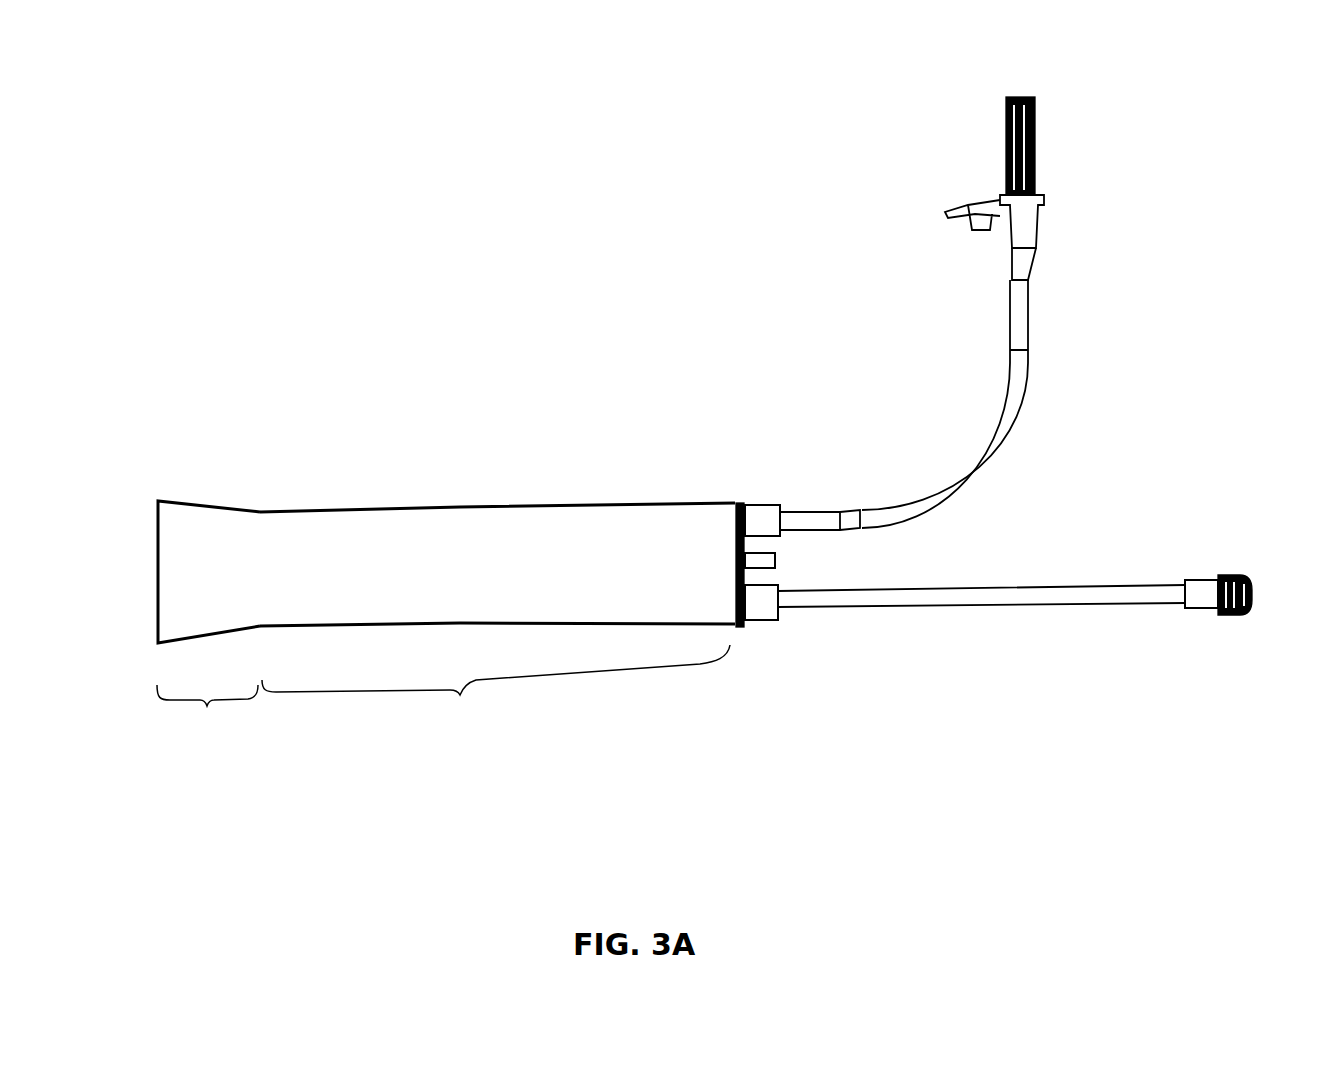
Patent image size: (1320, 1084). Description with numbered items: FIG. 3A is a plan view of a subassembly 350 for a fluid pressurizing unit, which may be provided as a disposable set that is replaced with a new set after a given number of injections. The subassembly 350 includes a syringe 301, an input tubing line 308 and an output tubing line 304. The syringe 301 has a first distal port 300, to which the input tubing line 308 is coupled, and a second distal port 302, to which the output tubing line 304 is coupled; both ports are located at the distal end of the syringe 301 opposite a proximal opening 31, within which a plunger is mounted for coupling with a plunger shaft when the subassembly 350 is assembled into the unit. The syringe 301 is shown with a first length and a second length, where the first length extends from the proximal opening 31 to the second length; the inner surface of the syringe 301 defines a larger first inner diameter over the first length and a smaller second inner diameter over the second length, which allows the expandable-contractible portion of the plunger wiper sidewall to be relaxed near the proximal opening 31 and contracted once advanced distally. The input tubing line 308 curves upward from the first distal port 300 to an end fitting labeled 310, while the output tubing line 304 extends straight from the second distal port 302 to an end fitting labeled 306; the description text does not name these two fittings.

The subassembly 350 is at (300, 167).
The proximal opening 31 is at (142, 520).
The syringe 301 is at (487, 472).
The first distal port 300 is at (763, 472).
The second distal port 302 is at (763, 645).
The output tubing line 304 is at (1000, 645).
The end cap 306 is at (1237, 647).
The input tubing line 308 is at (1040, 430).
The spike connector 310 is at (1086, 133).